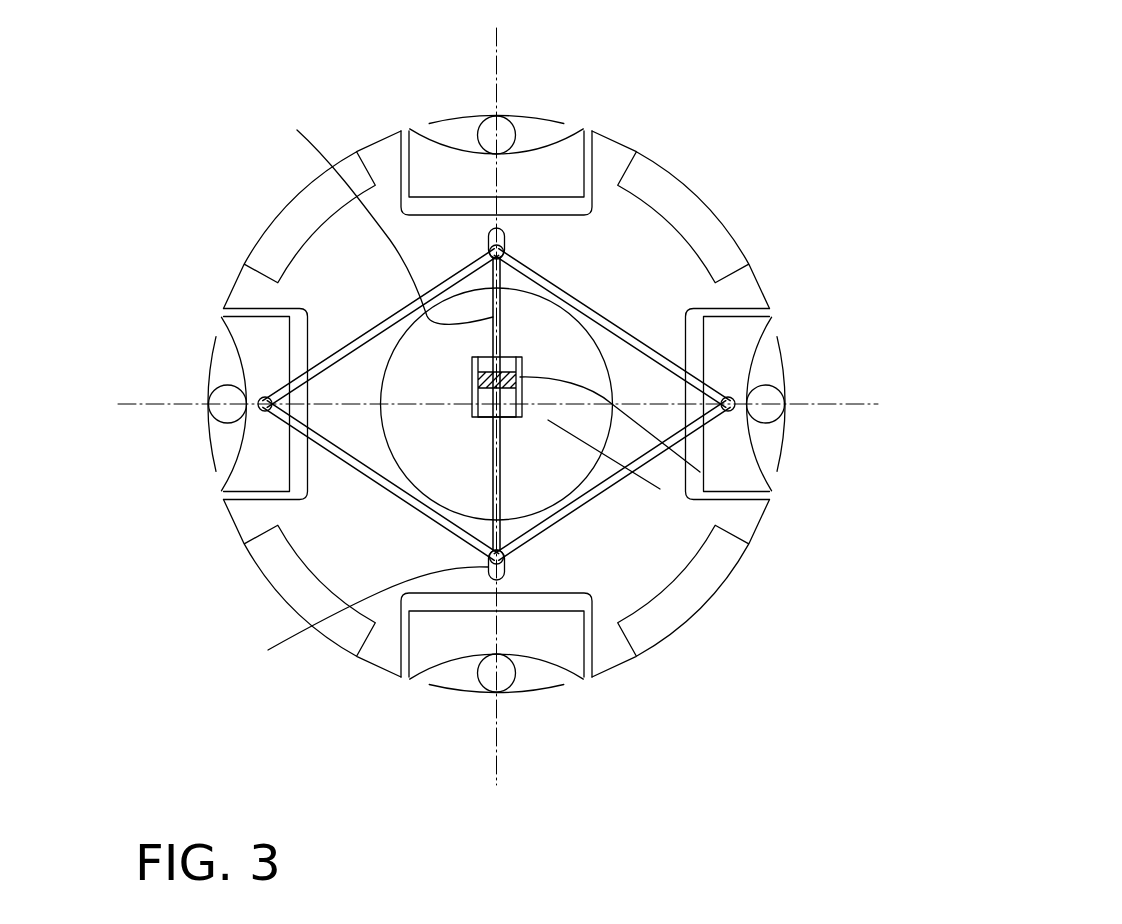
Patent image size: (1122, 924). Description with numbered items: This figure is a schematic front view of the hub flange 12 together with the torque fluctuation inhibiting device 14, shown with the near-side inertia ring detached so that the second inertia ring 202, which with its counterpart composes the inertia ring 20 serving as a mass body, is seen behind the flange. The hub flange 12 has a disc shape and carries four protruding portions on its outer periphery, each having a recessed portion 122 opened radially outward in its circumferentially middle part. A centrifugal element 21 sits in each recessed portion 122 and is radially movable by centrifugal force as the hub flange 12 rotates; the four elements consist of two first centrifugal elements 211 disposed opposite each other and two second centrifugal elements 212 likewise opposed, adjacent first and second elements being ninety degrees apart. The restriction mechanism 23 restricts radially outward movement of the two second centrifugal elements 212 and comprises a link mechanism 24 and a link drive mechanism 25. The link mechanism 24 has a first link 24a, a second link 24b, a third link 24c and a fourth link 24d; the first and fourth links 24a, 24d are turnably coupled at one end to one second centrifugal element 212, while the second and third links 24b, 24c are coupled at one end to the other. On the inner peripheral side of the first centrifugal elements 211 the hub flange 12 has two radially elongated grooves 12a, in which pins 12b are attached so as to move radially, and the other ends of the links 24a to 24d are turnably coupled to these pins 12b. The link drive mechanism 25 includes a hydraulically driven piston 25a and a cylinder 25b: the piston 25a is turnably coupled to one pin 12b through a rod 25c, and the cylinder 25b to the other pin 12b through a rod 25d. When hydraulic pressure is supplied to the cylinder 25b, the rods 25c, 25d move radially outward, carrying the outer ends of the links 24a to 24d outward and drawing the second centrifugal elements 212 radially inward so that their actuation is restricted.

The inertia ring 20 is at (516, 403).
The centrifugal element 21 is at (422, 116).
The torque fluctuation inhibiting device 14 is at (560, 102).
The restriction mechanism 23 is at (622, 280).
The hub flange 12 is at (681, 213).
The groove 12a is at (523, 213).
The pin 12b is at (506, 251).
The recessed portion 122 is at (440, 213).
The second inertia ring 202 is at (659, 169).
The first centrifugal element 211 is at (658, 148).
The second centrifugal element 212 is at (737, 330).
The link mechanism 24 is at (505, 418).
The first link 24a is at (390, 327).
The second link 24b is at (605, 318).
The third link 24c is at (612, 480).
The fourth link 24d is at (388, 485).
The link drive mechanism 25 is at (547, 386).
The piston 25a is at (700, 472).
The cylinder 25b is at (660, 489).
The rod 25c is at (364, 212).
The rod 25d is at (348, 619).